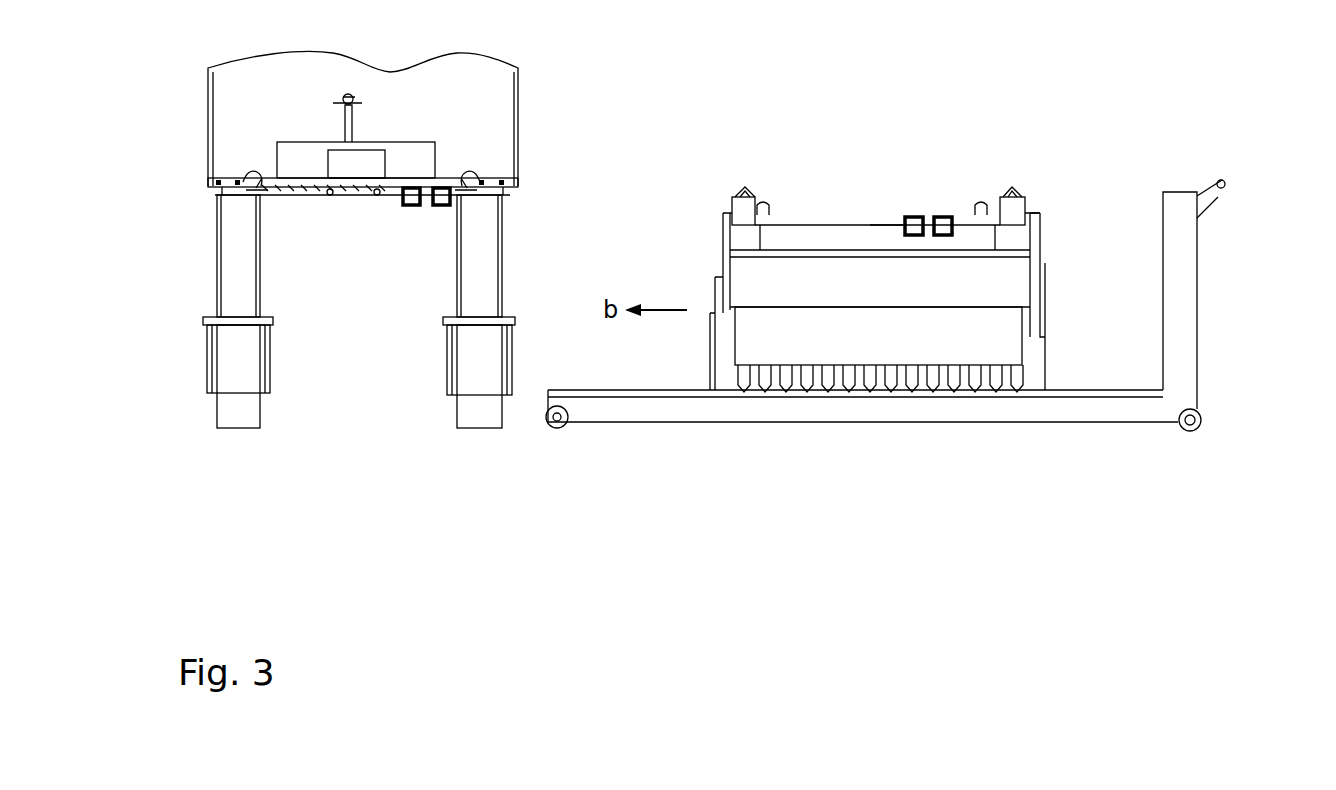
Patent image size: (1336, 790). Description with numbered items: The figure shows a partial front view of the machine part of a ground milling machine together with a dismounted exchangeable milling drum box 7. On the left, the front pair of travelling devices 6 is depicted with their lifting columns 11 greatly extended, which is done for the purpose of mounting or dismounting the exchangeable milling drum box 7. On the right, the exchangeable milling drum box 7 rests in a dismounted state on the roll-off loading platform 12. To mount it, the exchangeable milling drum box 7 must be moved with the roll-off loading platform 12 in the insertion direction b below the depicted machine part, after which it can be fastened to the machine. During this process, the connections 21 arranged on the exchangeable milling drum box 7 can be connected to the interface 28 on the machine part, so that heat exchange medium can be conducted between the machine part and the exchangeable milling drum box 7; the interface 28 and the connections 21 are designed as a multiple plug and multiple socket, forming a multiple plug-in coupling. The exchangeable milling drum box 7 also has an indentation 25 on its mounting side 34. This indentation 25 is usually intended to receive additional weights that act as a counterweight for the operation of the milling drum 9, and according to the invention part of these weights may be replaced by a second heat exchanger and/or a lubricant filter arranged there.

The front pair of travelling devices 6 is at (230, 380).
The exchangeable milling drum box 7 is at (1088, 179).
The milling drum 9 is at (836, 347).
The lifting columns 11 is at (227, 252).
The roll-off loading platform 12 is at (1185, 350).
The connections 21 is at (942, 230).
The indentation 25 is at (843, 238).
The interface 28 is at (440, 203).
The mounting side 34 is at (892, 205).